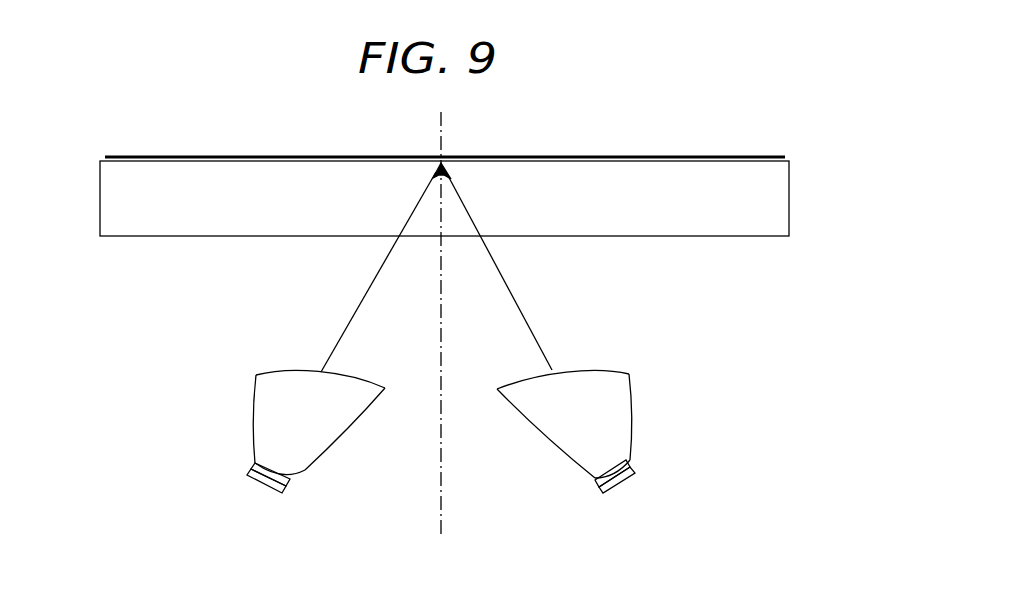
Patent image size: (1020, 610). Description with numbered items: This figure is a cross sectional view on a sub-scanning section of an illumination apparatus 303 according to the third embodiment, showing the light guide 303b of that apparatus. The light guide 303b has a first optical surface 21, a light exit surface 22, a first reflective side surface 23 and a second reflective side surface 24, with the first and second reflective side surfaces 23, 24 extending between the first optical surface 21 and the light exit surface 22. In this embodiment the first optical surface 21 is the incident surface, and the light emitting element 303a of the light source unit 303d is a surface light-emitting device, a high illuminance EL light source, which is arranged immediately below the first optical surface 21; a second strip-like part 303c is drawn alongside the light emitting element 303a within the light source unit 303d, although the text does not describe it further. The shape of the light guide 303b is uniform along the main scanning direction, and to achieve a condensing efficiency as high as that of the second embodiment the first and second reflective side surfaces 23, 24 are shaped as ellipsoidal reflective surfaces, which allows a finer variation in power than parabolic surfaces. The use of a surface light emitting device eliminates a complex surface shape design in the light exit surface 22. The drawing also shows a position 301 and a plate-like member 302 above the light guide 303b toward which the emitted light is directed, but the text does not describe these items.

The light irradiation position 301 is at (444, 153).
The original (document) 302 is at (614, 172).
The illumination apparatus 303 is at (253, 434).
The light emitting element 303a is at (255, 463).
The light guide 303b is at (296, 398).
The light guide strip 303c is at (219, 477).
The light source unit 303d is at (190, 457).
The first optical surface 21 is at (297, 469).
The light exit surface 22 is at (352, 374).
The first reflective side surface 23 is at (350, 428).
The second reflective side surface 24 is at (255, 383).